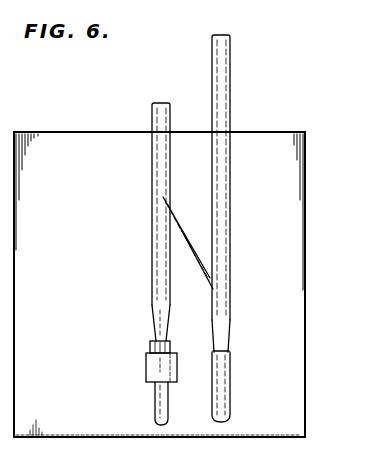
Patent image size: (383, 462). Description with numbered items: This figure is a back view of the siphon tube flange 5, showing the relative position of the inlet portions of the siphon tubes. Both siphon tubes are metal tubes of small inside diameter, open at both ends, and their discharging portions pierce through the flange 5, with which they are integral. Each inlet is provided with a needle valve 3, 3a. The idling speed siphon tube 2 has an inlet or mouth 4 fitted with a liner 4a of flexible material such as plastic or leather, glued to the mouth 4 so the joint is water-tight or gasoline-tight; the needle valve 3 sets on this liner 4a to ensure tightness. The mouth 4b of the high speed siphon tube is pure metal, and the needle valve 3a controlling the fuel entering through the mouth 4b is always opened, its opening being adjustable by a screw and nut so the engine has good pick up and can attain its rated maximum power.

The idling speed siphon tube 2 is at (158, 400).
The needle valve 3 is at (152, 112).
The needle valve 3a is at (231, 62).
The mouth 4 is at (146, 372).
The liner 4a is at (150, 348).
The mouth 4b is at (230, 349).
The siphon tube flange 5 is at (78, 138).